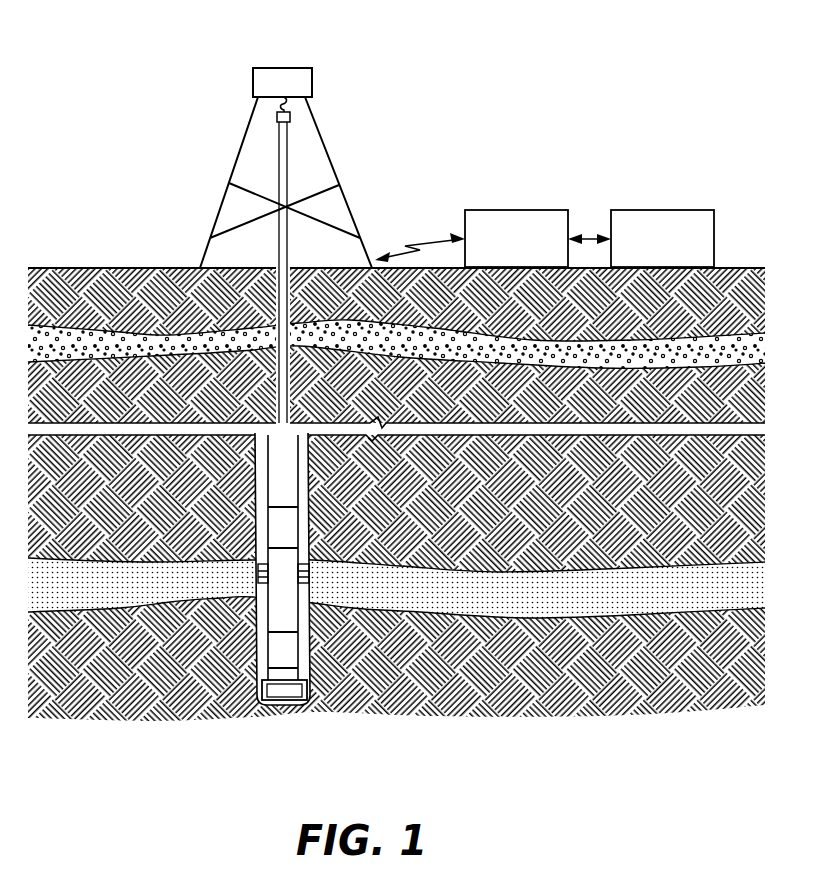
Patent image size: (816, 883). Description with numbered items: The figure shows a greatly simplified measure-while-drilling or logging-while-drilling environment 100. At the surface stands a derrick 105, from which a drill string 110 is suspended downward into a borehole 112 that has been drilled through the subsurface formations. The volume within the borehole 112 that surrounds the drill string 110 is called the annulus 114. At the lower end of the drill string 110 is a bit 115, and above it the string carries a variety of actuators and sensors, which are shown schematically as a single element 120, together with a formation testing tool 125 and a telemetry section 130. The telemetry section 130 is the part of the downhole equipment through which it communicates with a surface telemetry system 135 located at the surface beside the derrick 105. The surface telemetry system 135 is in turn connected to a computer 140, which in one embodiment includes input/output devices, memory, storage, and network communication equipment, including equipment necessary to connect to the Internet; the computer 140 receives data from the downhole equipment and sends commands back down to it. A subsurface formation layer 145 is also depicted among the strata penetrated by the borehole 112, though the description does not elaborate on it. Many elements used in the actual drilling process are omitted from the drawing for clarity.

The environment 100 is at (396, 396).
The derrick 105 is at (290, 68).
The drill string 110 is at (285, 168).
The borehole 112 is at (290, 268).
The annulus 114 is at (307, 530).
The bit 115 is at (280, 690).
The actuators and sensors 120 is at (266, 598).
The formation testing tool 125 is at (300, 618).
The telemetry section 130 is at (268, 525).
The surface telemetry system 135 is at (512, 210).
The computer 140 is at (657, 210).
The formation layer 145 is at (512, 603).